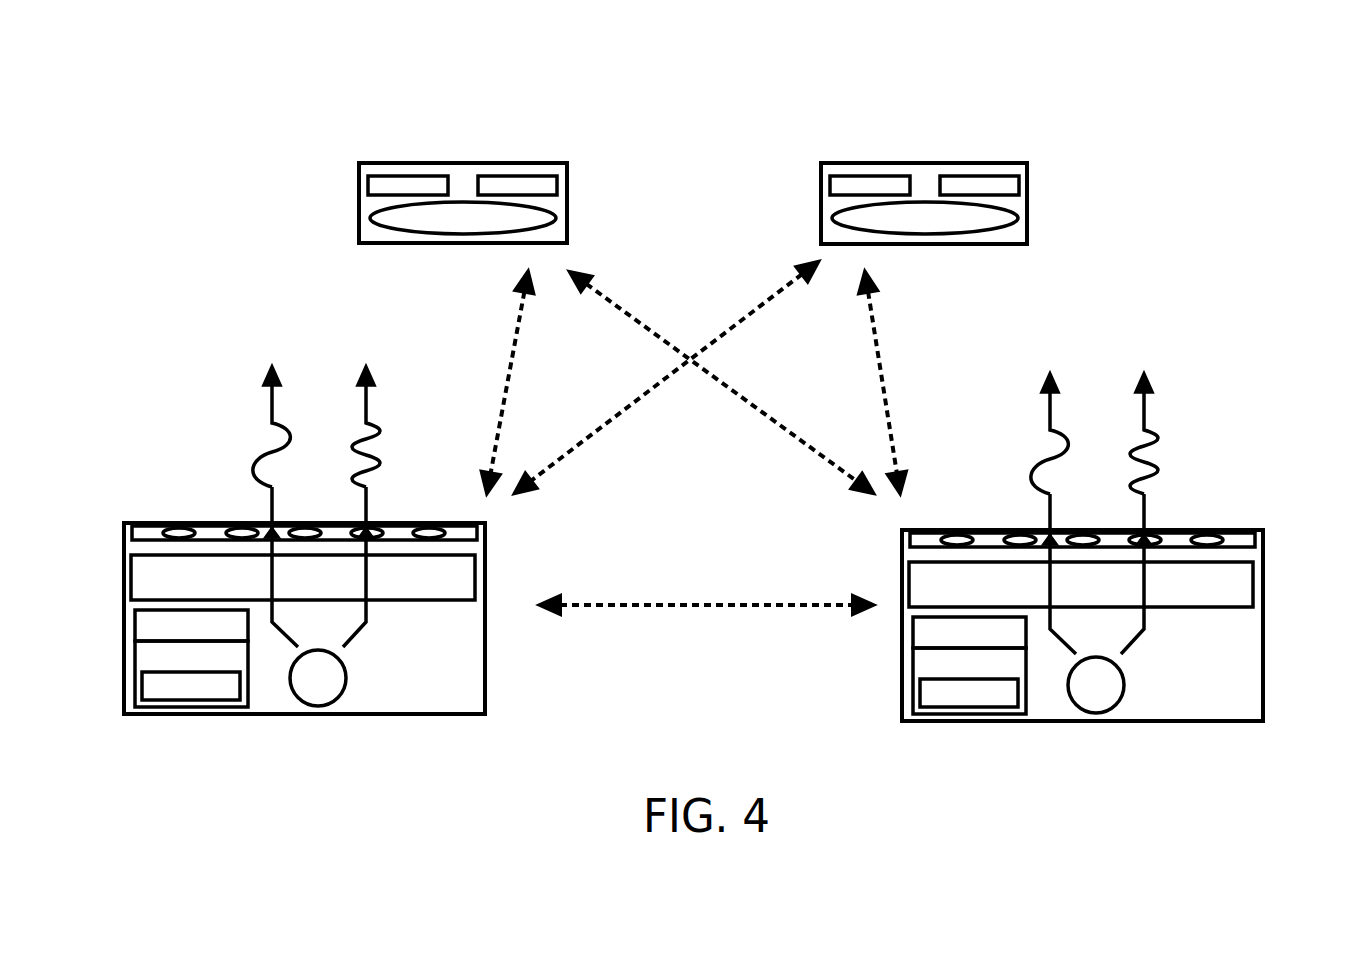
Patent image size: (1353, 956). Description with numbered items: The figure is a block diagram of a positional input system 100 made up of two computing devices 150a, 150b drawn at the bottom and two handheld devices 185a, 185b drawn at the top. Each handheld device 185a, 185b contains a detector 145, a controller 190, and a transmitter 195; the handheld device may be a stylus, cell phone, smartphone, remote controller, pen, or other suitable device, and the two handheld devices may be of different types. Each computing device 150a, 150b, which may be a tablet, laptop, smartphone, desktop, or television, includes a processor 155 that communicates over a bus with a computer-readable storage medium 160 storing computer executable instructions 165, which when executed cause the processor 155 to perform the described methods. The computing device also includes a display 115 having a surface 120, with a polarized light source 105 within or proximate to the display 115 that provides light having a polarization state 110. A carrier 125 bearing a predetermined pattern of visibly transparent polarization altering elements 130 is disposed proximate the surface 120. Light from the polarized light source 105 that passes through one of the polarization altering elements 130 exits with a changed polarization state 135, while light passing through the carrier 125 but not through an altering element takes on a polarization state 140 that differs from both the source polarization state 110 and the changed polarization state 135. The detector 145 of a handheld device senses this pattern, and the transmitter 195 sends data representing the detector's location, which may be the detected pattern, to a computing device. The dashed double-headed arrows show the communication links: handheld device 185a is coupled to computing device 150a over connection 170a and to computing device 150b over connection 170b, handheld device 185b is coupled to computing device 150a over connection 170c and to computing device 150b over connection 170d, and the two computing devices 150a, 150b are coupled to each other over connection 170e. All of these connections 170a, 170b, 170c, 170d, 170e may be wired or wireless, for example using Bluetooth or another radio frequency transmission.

The positional input system 100 is at (712, 90).
The polarized light source 105 is at (346, 680).
The polarization state 110 is at (274, 623).
The display 115 is at (477, 587).
The surface 120 is at (468, 553).
The carrier 125 is at (263, 530).
The polarization altering elements 130 is at (374, 530).
The changed polarization state 135 is at (366, 408).
The polarization state 140 is at (272, 406).
The detector 145 is at (558, 218).
The computing device 150a is at (485, 680).
The computing device 150b is at (1263, 687).
The processor 155 is at (580, 629).
The computer-readable storage medium 160 is at (580, 677).
The computer executable instructions 165 is at (580, 689).
The connection 170a is at (513, 345).
The connection 170b is at (762, 413).
The connection 170c is at (877, 345).
The connection 170d is at (622, 413).
The connection 170e is at (697, 603).
The handheld device 185a is at (359, 218).
The handheld device 185b is at (821, 218).
The controller 190 is at (383, 175).
The transmitter 195 is at (493, 175).